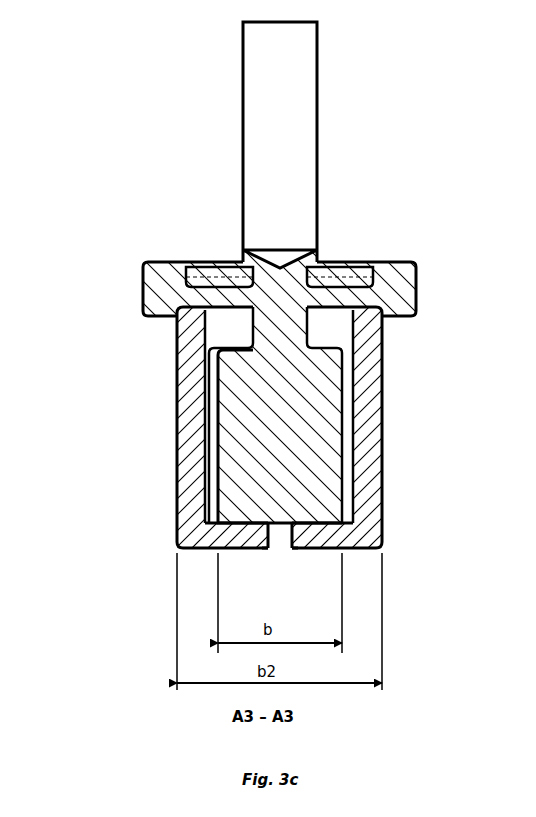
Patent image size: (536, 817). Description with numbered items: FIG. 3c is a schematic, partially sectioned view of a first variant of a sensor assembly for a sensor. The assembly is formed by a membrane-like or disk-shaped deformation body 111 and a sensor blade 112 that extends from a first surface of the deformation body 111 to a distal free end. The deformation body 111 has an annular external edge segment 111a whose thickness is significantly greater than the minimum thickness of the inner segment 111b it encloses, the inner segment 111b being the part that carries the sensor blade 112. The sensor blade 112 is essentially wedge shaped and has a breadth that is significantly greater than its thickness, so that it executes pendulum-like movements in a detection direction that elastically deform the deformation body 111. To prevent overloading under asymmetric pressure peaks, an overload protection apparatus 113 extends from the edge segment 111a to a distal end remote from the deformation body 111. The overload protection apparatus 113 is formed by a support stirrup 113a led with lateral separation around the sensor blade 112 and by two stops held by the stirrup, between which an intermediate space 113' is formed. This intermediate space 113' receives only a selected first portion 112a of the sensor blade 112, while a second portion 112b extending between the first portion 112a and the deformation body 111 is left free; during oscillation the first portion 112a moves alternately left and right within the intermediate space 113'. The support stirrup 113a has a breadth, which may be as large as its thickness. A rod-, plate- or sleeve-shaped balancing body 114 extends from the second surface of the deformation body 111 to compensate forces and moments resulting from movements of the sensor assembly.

The balancing body 114 is at (228, 95).
The deformation body 111 is at (342, 278).
The external edge segment 111a is at (158, 275).
The inner segment 111b is at (213, 292).
The sensor blade 112 is at (318, 339).
The second portion of the sensor blade 112b is at (287, 435).
The first portion of the sensor blade 112a is at (283, 537).
The overload protection apparatus 113 is at (268, 427).
The support stirrup 113a is at (188, 448).
The intermediate space 113' is at (277, 574).